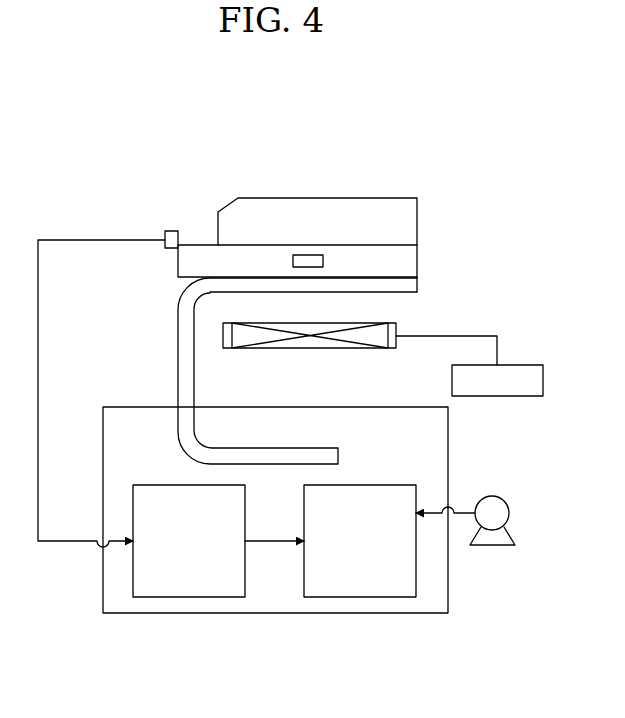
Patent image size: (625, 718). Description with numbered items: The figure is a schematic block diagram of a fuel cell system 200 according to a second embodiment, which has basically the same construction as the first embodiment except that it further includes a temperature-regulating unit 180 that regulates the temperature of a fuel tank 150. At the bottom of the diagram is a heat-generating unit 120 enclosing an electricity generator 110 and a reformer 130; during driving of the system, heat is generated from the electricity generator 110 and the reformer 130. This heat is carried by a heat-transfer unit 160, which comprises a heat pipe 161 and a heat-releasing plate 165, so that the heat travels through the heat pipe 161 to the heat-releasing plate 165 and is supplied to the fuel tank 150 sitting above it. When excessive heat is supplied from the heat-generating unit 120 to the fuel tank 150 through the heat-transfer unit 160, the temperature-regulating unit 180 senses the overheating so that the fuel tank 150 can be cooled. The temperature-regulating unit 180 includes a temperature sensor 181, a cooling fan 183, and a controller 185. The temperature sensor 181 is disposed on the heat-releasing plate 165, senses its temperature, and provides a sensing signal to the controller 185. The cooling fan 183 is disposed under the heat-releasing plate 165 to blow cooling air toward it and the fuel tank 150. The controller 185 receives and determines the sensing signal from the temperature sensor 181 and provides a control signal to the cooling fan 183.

The fuel cell system 200 is at (310, 112).
The fuel tank 150 is at (352, 198).
The heat-transfer unit 160 is at (426, 282).
The heat-releasing plate 165 is at (418, 257).
The temperature sensor 181 is at (300, 255).
The heat pipe 161 is at (177, 343).
The cooling fan 183 is at (313, 348).
The controller 185 is at (543, 381).
The temperature-regulating unit 180 is at (530, 343).
The heat-generating unit 120 is at (265, 623).
The reformer 130 is at (185, 597).
The electricity generator 110 is at (362, 597).